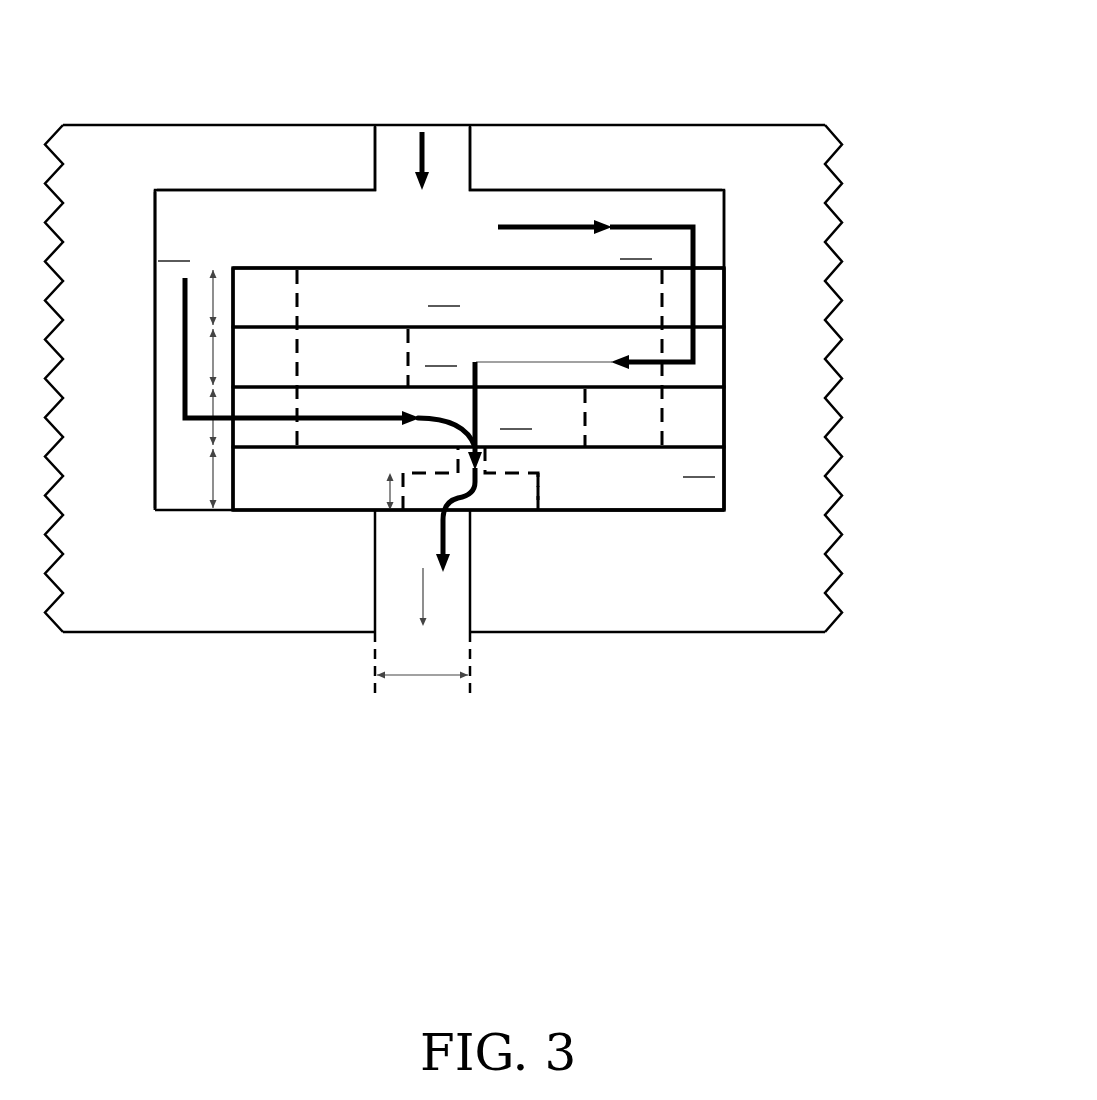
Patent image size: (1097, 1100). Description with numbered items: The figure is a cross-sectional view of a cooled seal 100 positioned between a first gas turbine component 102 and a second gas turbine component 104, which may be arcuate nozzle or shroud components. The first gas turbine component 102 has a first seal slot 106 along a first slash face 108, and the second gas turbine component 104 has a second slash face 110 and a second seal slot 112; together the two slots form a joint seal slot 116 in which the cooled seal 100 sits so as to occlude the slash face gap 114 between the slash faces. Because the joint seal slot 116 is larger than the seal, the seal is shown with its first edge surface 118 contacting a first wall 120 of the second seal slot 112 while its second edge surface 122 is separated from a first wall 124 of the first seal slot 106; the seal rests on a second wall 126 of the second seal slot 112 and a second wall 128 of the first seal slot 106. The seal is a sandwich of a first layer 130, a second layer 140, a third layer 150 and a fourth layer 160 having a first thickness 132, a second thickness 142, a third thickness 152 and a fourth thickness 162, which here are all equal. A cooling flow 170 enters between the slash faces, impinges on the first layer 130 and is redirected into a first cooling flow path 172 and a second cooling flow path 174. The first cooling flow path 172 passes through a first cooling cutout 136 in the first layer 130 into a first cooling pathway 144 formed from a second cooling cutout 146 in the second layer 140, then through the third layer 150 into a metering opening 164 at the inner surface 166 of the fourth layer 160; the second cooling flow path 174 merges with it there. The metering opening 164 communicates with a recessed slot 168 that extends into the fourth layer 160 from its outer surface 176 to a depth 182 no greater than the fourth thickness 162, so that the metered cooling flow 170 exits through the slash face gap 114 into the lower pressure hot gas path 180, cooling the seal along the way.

The cooled seal 100 is at (280, 234).
The first gas turbine component 102 is at (173, 33).
The second gas turbine component 104 is at (697, 48).
The first seal slot 106 is at (173, 350).
The first slash face 108 is at (372, 168).
The second slash face 110 is at (470, 162).
The second seal slot 112 is at (672, 229).
The slash face gap 114 is at (438, 678).
The joint seal slot 116 is at (408, 232).
The first edge surface 118 is at (725, 405).
The first wall 120 is at (725, 477).
The second edge surface 122 is at (233, 282).
The first wall 124 is at (153, 293).
The second wall 126 is at (643, 510).
The second wall 128 is at (193, 510).
The first layer 130 is at (478, 357).
The first thickness 132 is at (233, 296).
The first cooling cutout 136 is at (707, 298).
The second layer 140 is at (478, 357).
The second thickness 142 is at (233, 358).
The first cooling pathway 144 is at (527, 348).
The second cooling cutout 146 is at (707, 357).
The third layer 150 is at (478, 417).
The third thickness 152 is at (233, 411).
The fourth layer 160 is at (478, 478).
The fourth thickness 162 is at (233, 486).
The metering opening 164 is at (458, 448).
The inner surface 166 is at (597, 447).
The recessed slot 168 is at (538, 500).
The cooling flow 170 is at (427, 160).
The first cooling flow path 172 is at (635, 225).
The second cooling flow path 174 is at (183, 373).
The outer surface 176 is at (605, 510).
The hot gas path 180 is at (423, 597).
The depth 182 is at (387, 490).